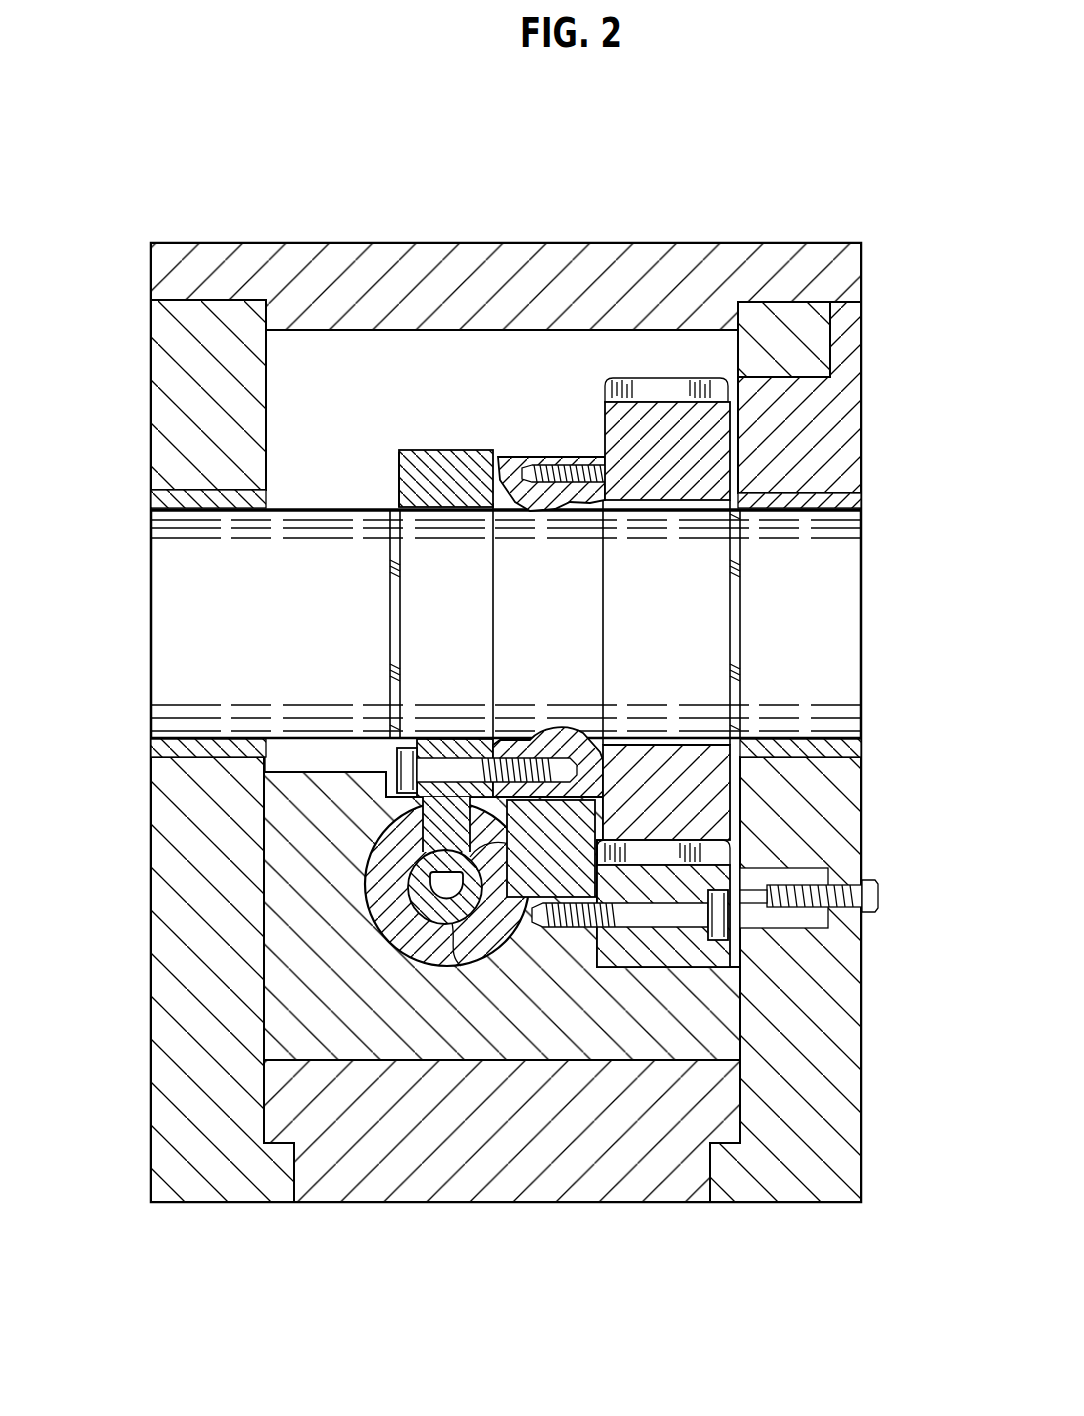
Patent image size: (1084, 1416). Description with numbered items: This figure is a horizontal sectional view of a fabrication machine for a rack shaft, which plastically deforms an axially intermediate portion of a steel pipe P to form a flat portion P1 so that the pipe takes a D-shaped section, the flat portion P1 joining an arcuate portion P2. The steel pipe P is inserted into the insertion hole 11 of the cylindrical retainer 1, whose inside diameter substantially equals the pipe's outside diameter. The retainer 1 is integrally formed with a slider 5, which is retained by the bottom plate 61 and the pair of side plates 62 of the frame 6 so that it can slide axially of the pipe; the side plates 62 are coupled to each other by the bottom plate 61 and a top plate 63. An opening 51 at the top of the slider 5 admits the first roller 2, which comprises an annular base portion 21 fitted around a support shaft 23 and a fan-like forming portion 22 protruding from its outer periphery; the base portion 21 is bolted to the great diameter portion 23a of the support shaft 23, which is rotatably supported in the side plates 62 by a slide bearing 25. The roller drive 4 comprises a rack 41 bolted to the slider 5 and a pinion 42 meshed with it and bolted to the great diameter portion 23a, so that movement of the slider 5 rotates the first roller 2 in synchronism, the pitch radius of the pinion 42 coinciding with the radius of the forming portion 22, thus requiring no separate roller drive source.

The retainer 1 is at (437, 952).
The first roller 2 is at (432, 445).
The roller drive 4 is at (716, 808).
The slider 5 is at (495, 1040).
The frame 6 is at (619, 240).
The insertion hole 11 is at (420, 906).
The base portion 21 is at (397, 470).
The forming portion 22 is at (418, 878).
The support shaft 23 is at (818, 650).
The great diameter portion 23a is at (538, 455).
The slide bearing 25 is at (207, 508).
The rack 41 is at (718, 957).
The pinion 42 is at (690, 770).
The opening 51 is at (392, 780).
The bottom plate 61 is at (608, 1168).
The side plates 62 is at (197, 872).
The top plate 63 is at (466, 257).
The steel pipe P is at (422, 908).
The flat portion P1 is at (551, 848).
The arcuate portion P2 is at (462, 958).